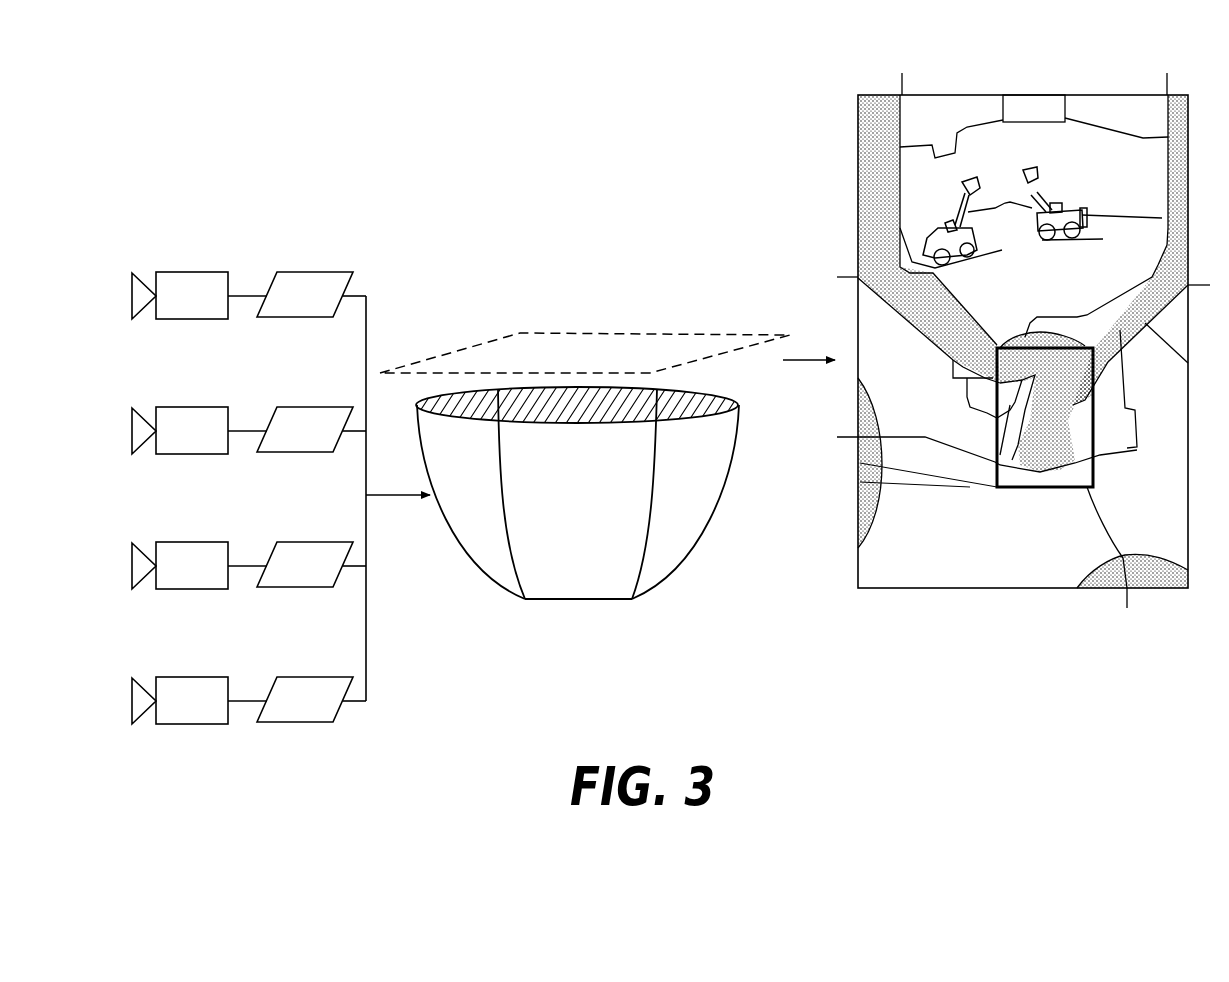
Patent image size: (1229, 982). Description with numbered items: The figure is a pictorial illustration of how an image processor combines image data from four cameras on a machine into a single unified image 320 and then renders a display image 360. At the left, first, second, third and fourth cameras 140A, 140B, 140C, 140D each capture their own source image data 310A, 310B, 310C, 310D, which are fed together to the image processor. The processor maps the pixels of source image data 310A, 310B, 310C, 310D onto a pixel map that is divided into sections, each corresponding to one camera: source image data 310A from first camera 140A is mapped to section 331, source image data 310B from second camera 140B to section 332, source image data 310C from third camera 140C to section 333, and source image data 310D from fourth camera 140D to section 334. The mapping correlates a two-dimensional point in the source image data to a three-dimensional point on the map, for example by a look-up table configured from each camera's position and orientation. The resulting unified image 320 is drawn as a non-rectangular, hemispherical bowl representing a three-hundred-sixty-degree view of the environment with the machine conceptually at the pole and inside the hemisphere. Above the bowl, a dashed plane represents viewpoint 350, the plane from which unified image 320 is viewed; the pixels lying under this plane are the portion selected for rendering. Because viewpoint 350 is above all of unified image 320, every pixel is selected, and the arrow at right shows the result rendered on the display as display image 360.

The first camera 140A is at (172, 272).
The second camera 140B is at (172, 407).
The third camera 140C is at (172, 542).
The fourth camera 140D is at (172, 677).
The source image data 310A is at (297, 272).
The source image data 310B is at (297, 407).
The source image data 310C is at (297, 542).
The source image data 310D is at (297, 677).
The unified image 320 is at (589, 483).
The section 331 is at (478, 552).
The section 332 is at (554, 582).
The section 333 is at (620, 400).
The section 334 is at (697, 531).
The viewpoint 350 is at (548, 333).
The display image 360 is at (905, 588).